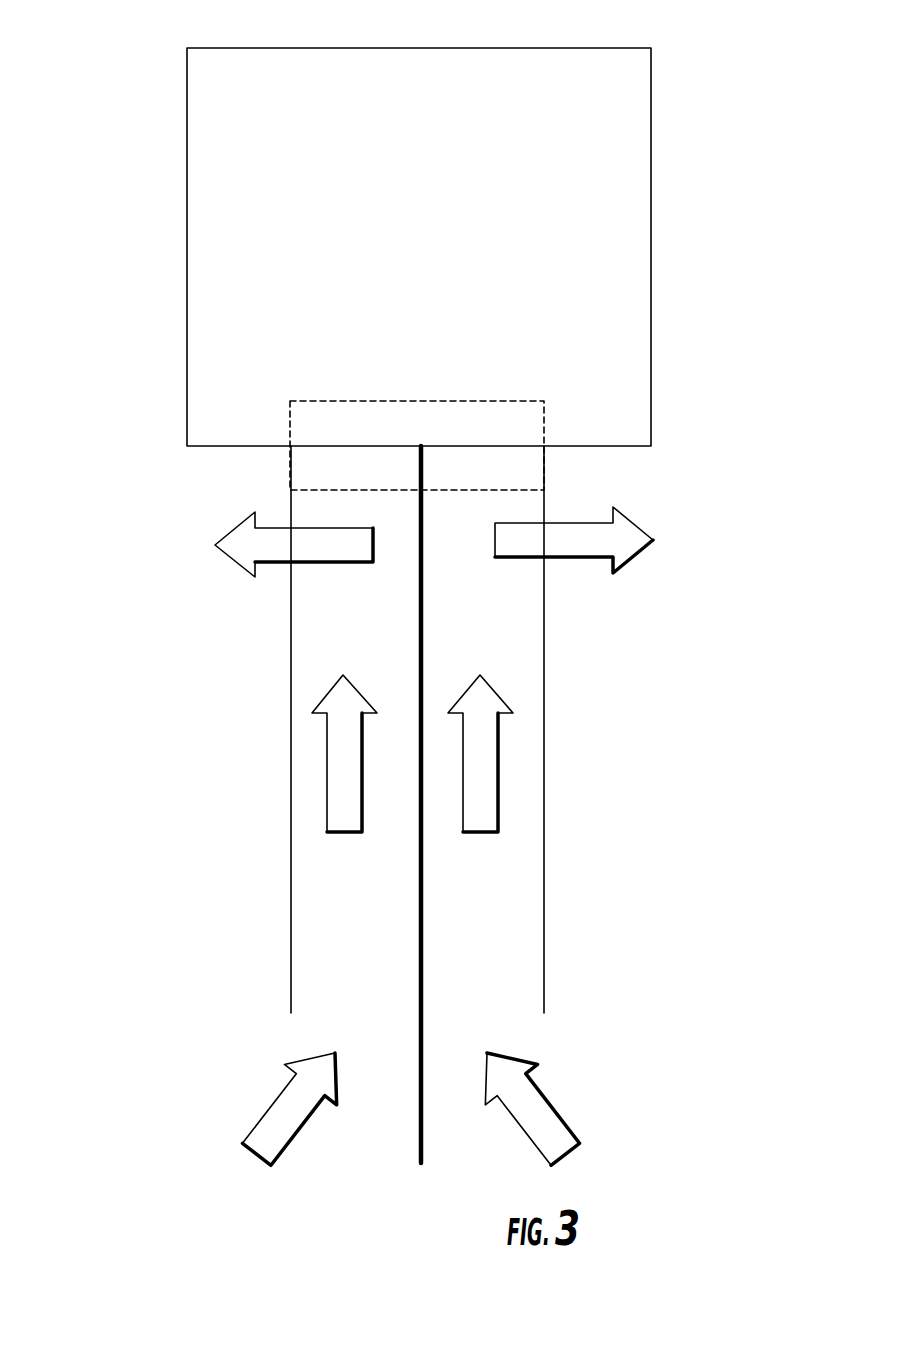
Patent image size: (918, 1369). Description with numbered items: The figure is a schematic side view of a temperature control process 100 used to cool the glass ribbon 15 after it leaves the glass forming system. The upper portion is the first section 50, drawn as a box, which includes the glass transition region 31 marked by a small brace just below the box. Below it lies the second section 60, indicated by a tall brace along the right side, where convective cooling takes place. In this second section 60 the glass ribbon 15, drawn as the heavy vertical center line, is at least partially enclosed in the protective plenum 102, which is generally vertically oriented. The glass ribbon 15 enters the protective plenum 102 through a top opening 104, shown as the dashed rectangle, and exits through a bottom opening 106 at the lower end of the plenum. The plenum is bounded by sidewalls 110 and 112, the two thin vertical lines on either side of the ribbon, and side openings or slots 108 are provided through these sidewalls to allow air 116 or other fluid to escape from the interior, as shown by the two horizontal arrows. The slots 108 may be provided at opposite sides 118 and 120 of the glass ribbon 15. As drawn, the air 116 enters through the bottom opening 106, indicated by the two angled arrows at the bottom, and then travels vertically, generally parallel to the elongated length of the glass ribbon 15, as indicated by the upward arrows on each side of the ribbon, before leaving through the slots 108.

The temperature control process 100 is at (421, 247).
The first section 50 is at (130, 48).
The glass transition region 31 is at (240, 398).
The second section 60 is at (687, 440).
The top opening 104 is at (497, 436).
The protective plenum 102 is at (282, 684).
The sidewall 110 is at (290, 785).
The sidewall 112 is at (545, 750).
The glass ribbon 15 is at (421, 895).
The side of the glass ribbon 120 is at (437, 976).
The side of the glass ribbon 118 is at (400, 958).
The bottom opening 106 is at (300, 1021).
The side openings or slots 108 is at (283, 563).
The air 116 is at (570, 538).